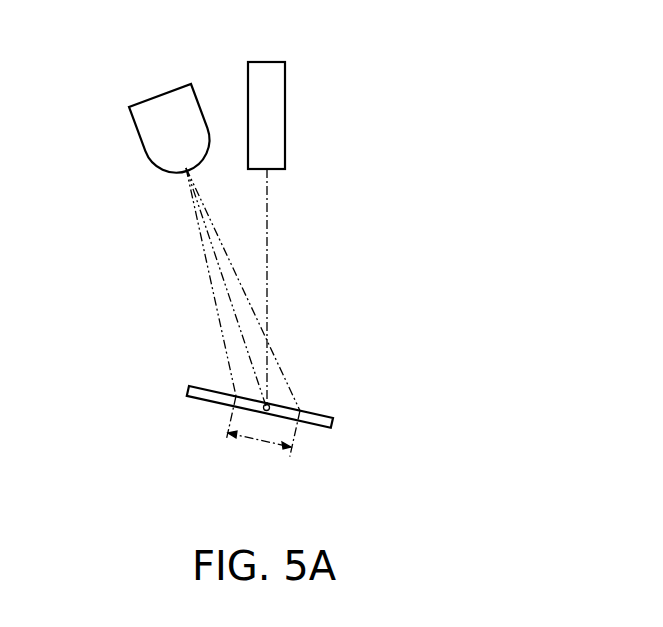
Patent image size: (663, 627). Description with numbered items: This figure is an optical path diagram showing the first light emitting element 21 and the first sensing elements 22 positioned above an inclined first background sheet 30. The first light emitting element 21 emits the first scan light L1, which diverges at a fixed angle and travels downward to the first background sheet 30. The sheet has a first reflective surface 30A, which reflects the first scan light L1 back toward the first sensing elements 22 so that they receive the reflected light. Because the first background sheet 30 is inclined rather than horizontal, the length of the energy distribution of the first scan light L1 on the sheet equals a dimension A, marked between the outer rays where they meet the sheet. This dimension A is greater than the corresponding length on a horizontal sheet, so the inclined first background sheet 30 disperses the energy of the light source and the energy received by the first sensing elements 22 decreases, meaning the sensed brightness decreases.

The first light emitting element 21 is at (169, 103).
The first sensing elements 22 is at (262, 85).
The first scan light L1 is at (219, 245).
The first background sheet 30 is at (190, 387).
The first reflective surface 30A is at (197, 382).
The dimension A is at (263, 432).